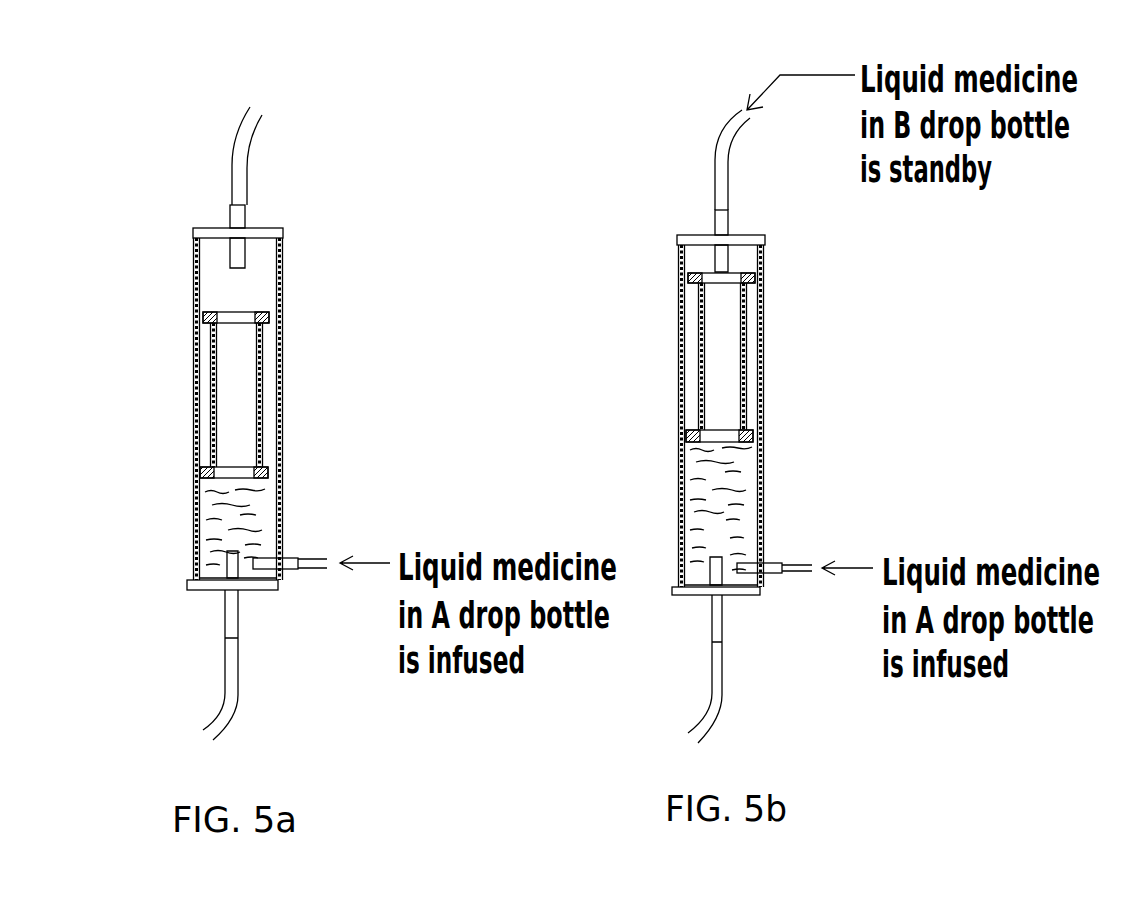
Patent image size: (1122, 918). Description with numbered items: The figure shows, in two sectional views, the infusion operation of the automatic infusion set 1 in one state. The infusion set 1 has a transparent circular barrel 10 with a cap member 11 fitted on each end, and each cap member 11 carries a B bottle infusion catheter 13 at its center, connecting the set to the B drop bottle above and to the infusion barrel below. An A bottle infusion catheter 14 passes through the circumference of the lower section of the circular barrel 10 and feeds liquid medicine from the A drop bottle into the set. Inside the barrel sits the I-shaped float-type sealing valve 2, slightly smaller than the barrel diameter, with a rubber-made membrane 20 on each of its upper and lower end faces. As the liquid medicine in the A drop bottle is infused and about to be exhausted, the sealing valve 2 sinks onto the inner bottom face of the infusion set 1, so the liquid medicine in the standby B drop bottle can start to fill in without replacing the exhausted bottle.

In FIG. 5A, the automatic infusion set 1 is at (215, 431).
In FIG. 5B, the automatic infusion set 1 is at (711, 426).
In FIG. 5A, the float-type sealing valve 2 is at (257, 378).
In FIG. 5B, the float-type sealing valve 2 is at (740, 357).
In FIG. 5A, the circular barrel 10 is at (192, 457).
In FIG. 5B, the circular barrel 10 is at (678, 405).
In FIG. 5A, the cap member 11 is at (205, 230).
In FIG. 5B, the cap member 11 is at (692, 235).
In FIG. 5A, the B bottle infusion catheter 13 is at (245, 143).
In FIG. 5B, the B bottle infusion catheter 13 is at (722, 172).
In FIG. 5A, the A bottle infusion catheter 14 is at (308, 570).
In FIG. 5B, the A bottle infusion catheter 14 is at (792, 577).
In FIG. 5A, the rubber-made membrane 20 is at (247, 308).
In FIG. 5B, the rubber-made membrane 20 is at (733, 284).